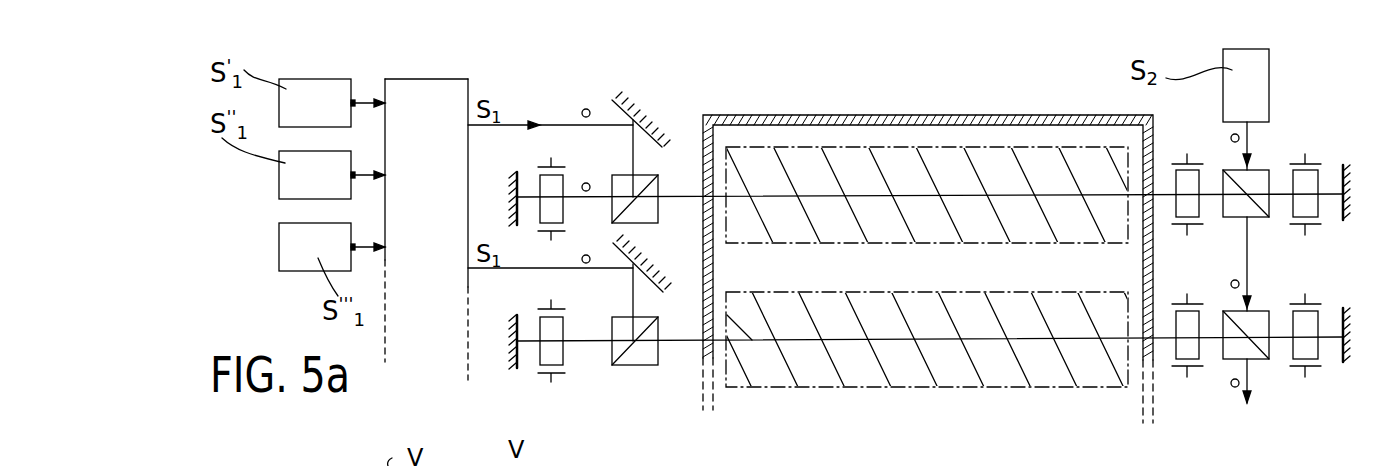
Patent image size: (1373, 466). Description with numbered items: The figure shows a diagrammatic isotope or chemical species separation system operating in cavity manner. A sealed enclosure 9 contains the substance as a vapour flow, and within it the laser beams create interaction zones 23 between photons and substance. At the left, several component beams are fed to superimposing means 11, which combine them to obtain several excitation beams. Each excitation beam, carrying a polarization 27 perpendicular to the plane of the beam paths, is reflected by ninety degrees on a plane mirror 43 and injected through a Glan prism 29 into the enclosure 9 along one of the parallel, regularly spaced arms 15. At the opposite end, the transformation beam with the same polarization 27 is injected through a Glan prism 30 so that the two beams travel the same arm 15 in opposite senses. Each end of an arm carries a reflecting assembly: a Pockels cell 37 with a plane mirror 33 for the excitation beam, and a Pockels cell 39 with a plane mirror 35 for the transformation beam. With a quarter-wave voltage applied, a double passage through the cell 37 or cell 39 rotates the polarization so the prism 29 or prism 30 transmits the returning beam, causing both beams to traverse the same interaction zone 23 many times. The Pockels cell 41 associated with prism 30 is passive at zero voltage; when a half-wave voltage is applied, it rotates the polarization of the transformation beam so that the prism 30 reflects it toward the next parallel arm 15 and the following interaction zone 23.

The sealed enclosure 9 is at (778, 120).
The superimposing means 11 is at (433, 98).
The arms 15 is at (986, 195).
The interaction zone 23 is at (890, 147).
The polarization 27 is at (586, 108).
The Glan prism 29 is at (657, 212).
The Glan prism 30 is at (1258, 322).
The plane mirror 33 is at (510, 213).
The plane mirror 35 is at (1341, 165).
The Pockels cell 37 is at (556, 184).
The Pockels cell 39 is at (1314, 202).
The Pockels cell 41 is at (1192, 330).
The plane mirror 43 is at (637, 113).